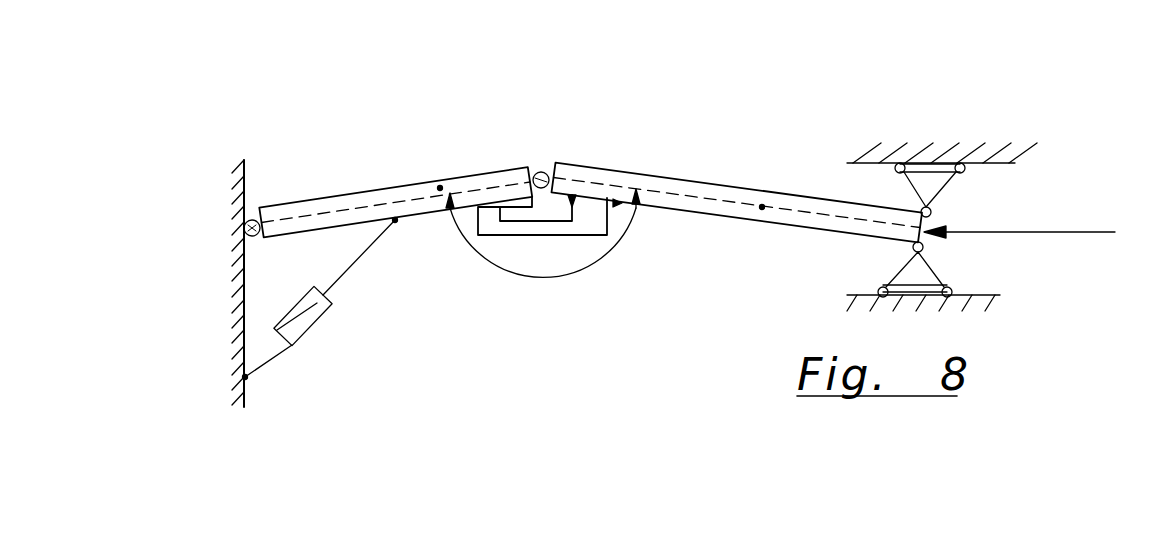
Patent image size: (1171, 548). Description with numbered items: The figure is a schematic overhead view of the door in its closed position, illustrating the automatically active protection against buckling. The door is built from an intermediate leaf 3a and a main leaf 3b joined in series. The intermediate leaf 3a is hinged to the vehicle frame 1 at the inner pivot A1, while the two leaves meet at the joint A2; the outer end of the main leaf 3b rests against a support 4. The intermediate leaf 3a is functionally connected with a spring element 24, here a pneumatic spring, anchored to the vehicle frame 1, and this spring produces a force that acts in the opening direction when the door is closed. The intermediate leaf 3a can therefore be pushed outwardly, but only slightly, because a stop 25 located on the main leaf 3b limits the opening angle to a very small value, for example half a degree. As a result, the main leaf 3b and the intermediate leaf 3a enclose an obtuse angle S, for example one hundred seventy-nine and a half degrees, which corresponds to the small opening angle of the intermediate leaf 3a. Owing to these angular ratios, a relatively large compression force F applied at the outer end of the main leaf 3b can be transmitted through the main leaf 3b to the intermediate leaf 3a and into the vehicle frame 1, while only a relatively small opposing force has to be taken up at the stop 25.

The vehicle frame 1 is at (244, 194).
The first pivot axis A1 is at (242, 236).
The intermediate leaf 3a is at (440, 188).
The main leaf 3b is at (762, 207).
The second pivot axis (joint between arm portions) A2 is at (541, 172).
The stop 25 is at (519, 226).
The obtuse angle S is at (543, 257).
The spring element 24 is at (317, 323).
The roller guide support 4 is at (1040, 182).
The compression force F is at (1042, 232).